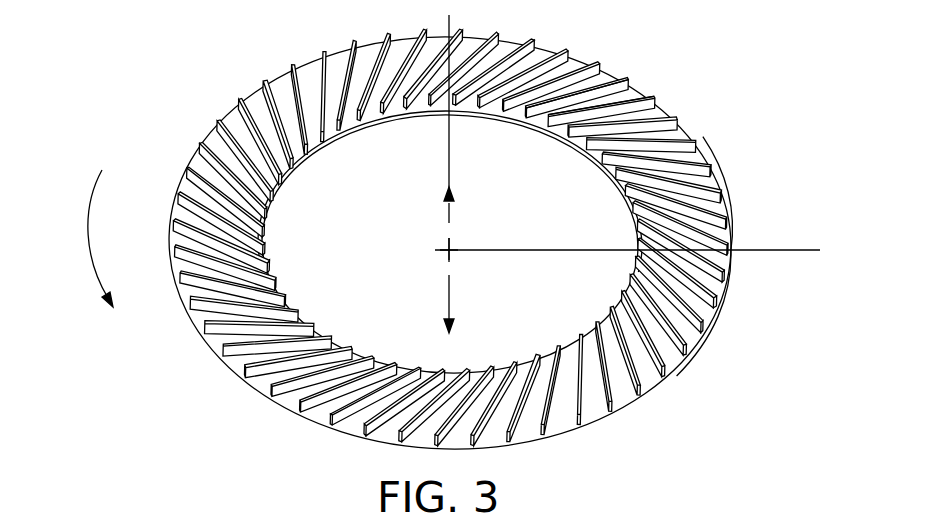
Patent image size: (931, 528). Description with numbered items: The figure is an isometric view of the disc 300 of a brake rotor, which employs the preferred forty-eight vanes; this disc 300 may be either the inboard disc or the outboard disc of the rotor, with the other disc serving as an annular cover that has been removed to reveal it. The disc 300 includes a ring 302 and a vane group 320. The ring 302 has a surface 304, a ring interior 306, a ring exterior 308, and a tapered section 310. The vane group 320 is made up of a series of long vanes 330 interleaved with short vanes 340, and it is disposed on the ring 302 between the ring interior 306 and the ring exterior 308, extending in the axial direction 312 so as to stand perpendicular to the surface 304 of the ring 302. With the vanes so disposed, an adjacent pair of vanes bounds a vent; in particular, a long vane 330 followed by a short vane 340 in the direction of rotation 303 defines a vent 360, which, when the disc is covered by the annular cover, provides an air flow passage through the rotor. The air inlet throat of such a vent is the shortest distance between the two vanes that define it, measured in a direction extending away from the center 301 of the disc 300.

The disc 300 is at (430, 248).
The center 301 is at (448, 252).
The ring 302 is at (667, 383).
The direction of rotation 303 is at (92, 248).
The surface 304 is at (702, 328).
The ring interior 306 is at (635, 250).
The ring exterior 308 is at (727, 222).
The tapered section 310 is at (265, 188).
The axial direction 312 is at (452, 210).
The vane group 320 is at (440, 249).
The long vanes 330 is at (603, 78).
The short vanes 340 is at (637, 100).
The vent 360 is at (607, 83).